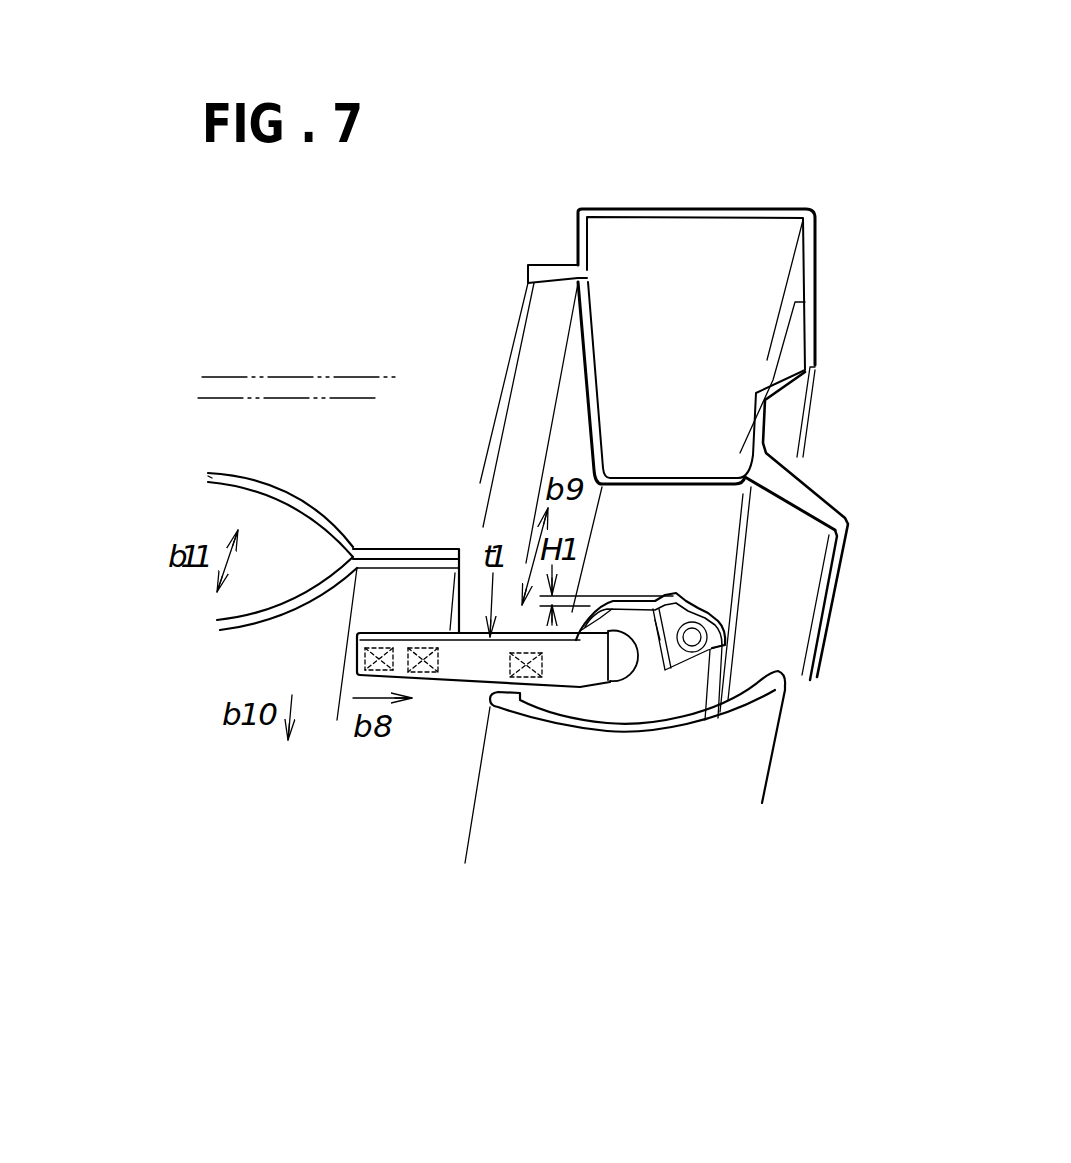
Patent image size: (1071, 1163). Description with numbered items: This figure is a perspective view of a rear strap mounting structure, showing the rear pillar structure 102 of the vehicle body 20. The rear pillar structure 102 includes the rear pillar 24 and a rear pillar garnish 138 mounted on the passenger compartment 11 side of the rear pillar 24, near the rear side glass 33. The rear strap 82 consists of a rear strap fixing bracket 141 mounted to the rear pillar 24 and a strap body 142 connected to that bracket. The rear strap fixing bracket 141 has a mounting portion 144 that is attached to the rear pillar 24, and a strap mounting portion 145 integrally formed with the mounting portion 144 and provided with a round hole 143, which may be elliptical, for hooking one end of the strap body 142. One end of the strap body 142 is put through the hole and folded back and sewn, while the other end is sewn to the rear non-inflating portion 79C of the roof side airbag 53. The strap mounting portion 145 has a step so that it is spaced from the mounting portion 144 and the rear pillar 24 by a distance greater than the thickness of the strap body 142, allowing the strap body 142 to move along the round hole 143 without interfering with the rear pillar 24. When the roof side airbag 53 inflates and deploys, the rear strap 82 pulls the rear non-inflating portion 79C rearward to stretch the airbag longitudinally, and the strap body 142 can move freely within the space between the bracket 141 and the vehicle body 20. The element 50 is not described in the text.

The passenger compartment 11 is at (273, 968).
The vehicle body 20 is at (636, 118).
The rear pillar 24 is at (671, 190).
The rear side glass 33 is at (230, 375).
The door 50 is at (120, 378).
The roof side airbag 53 is at (187, 490).
The rear non-inflating portion 79C is at (400, 580).
The rear strap 82 is at (476, 630).
The rear pillar structure 102 is at (550, 181).
The rear pillar garnish 138 is at (767, 787).
The rear strap fixing bracket 141 is at (678, 600).
The strap body 142 is at (466, 668).
The round hole 143 is at (645, 652).
The mounting portion 144 is at (693, 693).
The strap mounting portion 145 is at (637, 688).